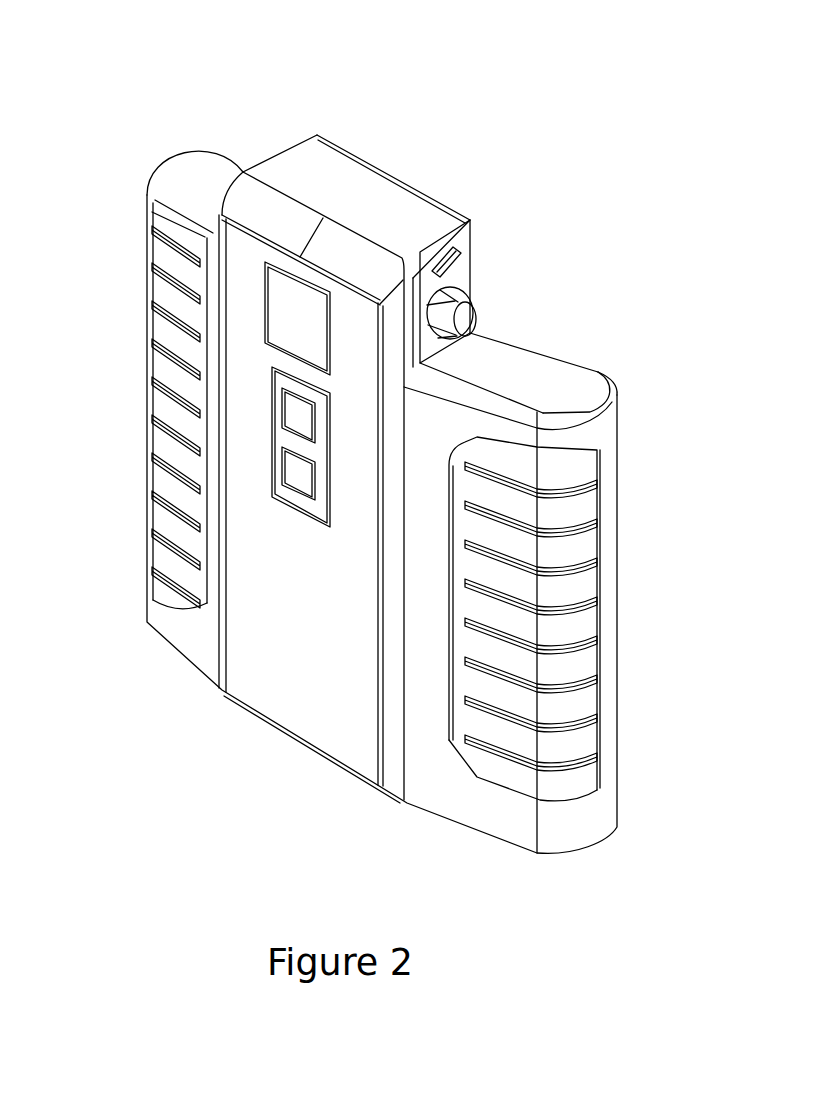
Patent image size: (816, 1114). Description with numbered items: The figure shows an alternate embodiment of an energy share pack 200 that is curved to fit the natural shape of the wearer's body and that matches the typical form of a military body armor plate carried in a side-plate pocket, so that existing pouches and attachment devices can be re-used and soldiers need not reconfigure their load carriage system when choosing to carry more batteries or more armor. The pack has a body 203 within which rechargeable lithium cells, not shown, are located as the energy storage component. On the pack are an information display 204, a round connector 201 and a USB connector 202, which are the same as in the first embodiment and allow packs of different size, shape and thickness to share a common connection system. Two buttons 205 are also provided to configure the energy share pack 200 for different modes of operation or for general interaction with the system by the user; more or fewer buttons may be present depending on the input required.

The energy share pack 200 is at (356, 430).
The round connector 201 is at (470, 310).
The USB connector 202 is at (455, 248).
The body 203 is at (290, 607).
The information display 204 is at (303, 322).
The buttons 205 is at (287, 440).